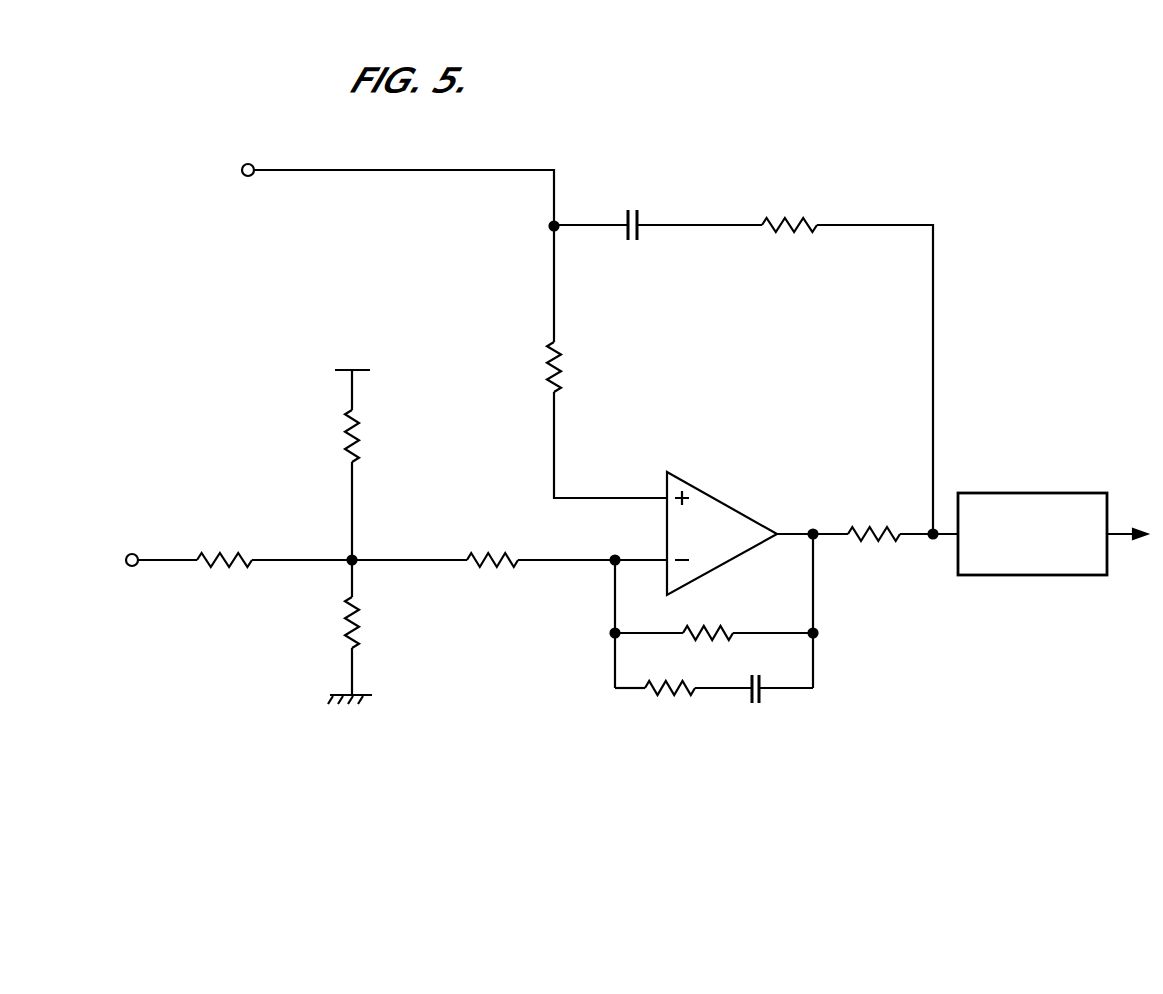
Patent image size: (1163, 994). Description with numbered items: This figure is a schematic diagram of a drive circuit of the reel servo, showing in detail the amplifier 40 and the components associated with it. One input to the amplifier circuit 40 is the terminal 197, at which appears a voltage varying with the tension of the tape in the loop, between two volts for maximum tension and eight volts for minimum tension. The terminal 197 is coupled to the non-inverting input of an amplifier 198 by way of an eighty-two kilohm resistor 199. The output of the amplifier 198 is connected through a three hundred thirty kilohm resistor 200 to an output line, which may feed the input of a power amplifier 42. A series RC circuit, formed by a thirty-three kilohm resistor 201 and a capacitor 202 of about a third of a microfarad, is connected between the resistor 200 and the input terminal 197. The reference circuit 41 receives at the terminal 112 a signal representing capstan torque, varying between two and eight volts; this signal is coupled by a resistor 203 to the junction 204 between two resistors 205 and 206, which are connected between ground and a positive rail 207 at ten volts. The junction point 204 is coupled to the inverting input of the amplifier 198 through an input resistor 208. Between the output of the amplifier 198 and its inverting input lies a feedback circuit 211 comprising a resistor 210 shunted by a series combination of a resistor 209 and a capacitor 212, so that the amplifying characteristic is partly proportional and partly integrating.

The amplifier 40 is at (889, 587).
The reference circuit 41 is at (432, 452).
The power amplifier 42 is at (1038, 486).
The terminal 112 is at (134, 552).
The terminal 197 is at (243, 166).
The amplifier 198 is at (755, 497).
The resistor 199 is at (561, 373).
The resistor 200 is at (858, 528).
The resistor 201 is at (795, 216).
The capacitor 202 is at (632, 206).
The resistor 203 is at (218, 553).
The junction 204 is at (348, 556).
The resistor 205 is at (343, 434).
The resistor 206 is at (343, 626).
The positive rail 207 is at (340, 366).
The input resistor 208 is at (480, 553).
The resistor 209 is at (652, 698).
The resistor 210 is at (718, 628).
The feedback circuit 211 is at (613, 696).
The capacitor 212 is at (762, 704).